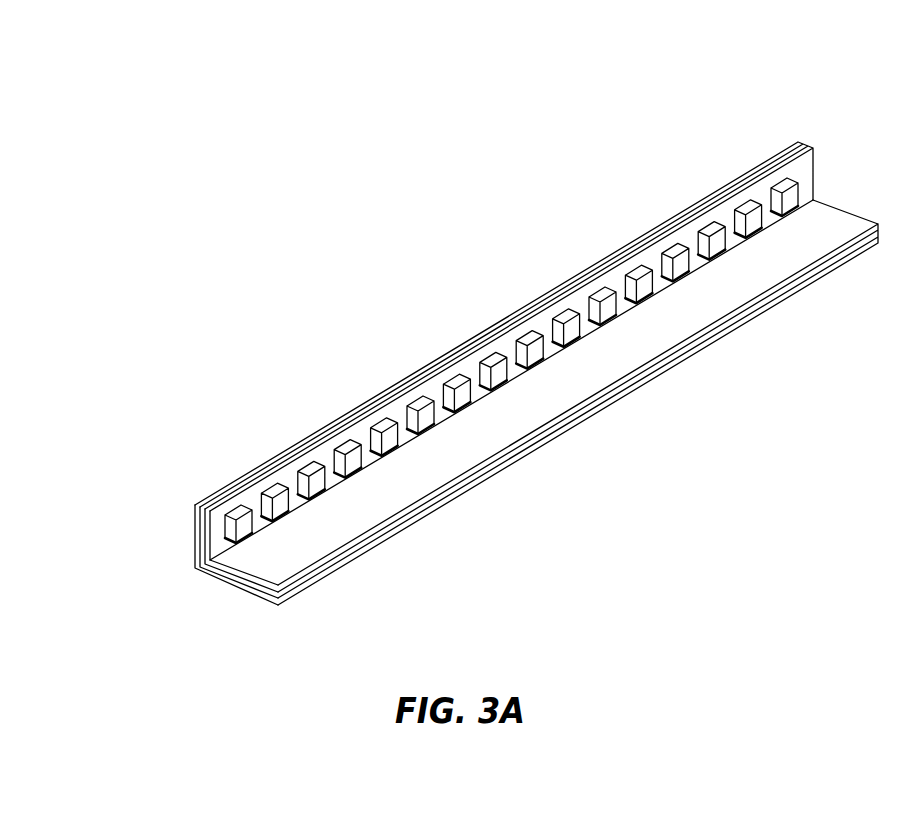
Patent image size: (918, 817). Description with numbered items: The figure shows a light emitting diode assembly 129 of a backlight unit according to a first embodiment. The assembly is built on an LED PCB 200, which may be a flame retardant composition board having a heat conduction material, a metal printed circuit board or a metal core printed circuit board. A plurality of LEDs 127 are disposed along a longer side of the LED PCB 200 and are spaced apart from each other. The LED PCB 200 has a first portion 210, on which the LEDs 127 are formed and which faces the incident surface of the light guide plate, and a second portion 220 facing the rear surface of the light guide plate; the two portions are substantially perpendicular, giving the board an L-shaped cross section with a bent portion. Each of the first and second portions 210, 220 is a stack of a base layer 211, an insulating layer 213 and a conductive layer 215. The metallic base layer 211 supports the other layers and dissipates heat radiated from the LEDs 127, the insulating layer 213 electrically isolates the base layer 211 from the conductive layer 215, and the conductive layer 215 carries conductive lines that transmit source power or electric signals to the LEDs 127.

The light emitting diode assembly 129 is at (460, 351).
The LEDs 127 is at (276, 488).
The LED PCB 200 is at (460, 409).
The first portion 210 is at (437, 374).
The base layer 211 is at (197, 523).
The insulating layer 213 is at (202, 532).
The conductive layer 215 is at (207, 546).
The second portion 220 is at (520, 438).